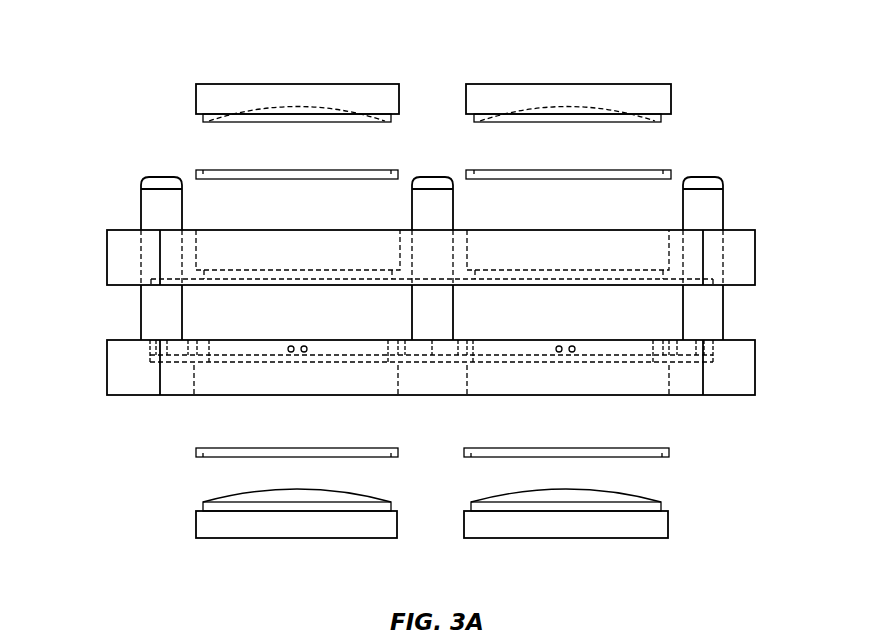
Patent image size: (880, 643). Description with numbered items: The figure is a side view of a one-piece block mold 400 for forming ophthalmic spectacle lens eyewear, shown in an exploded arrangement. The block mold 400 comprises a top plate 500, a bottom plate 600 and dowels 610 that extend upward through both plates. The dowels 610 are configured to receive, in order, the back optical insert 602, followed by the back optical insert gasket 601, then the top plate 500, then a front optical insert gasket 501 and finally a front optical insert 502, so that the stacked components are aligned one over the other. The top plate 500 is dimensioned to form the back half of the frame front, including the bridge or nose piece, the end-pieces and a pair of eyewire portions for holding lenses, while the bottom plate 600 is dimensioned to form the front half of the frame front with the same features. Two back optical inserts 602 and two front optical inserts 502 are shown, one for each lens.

The one-piece block mold 400 is at (125, 29).
The top plate 500 is at (107, 259).
The front optical insert gasket 501 is at (217, 170).
The front optical insert 502 is at (217, 84).
The bottom plate 600 is at (107, 368).
The back optical insert gasket 601 is at (216, 448).
The back optical insert 602 is at (196, 520).
The dowels 610 is at (141, 213).